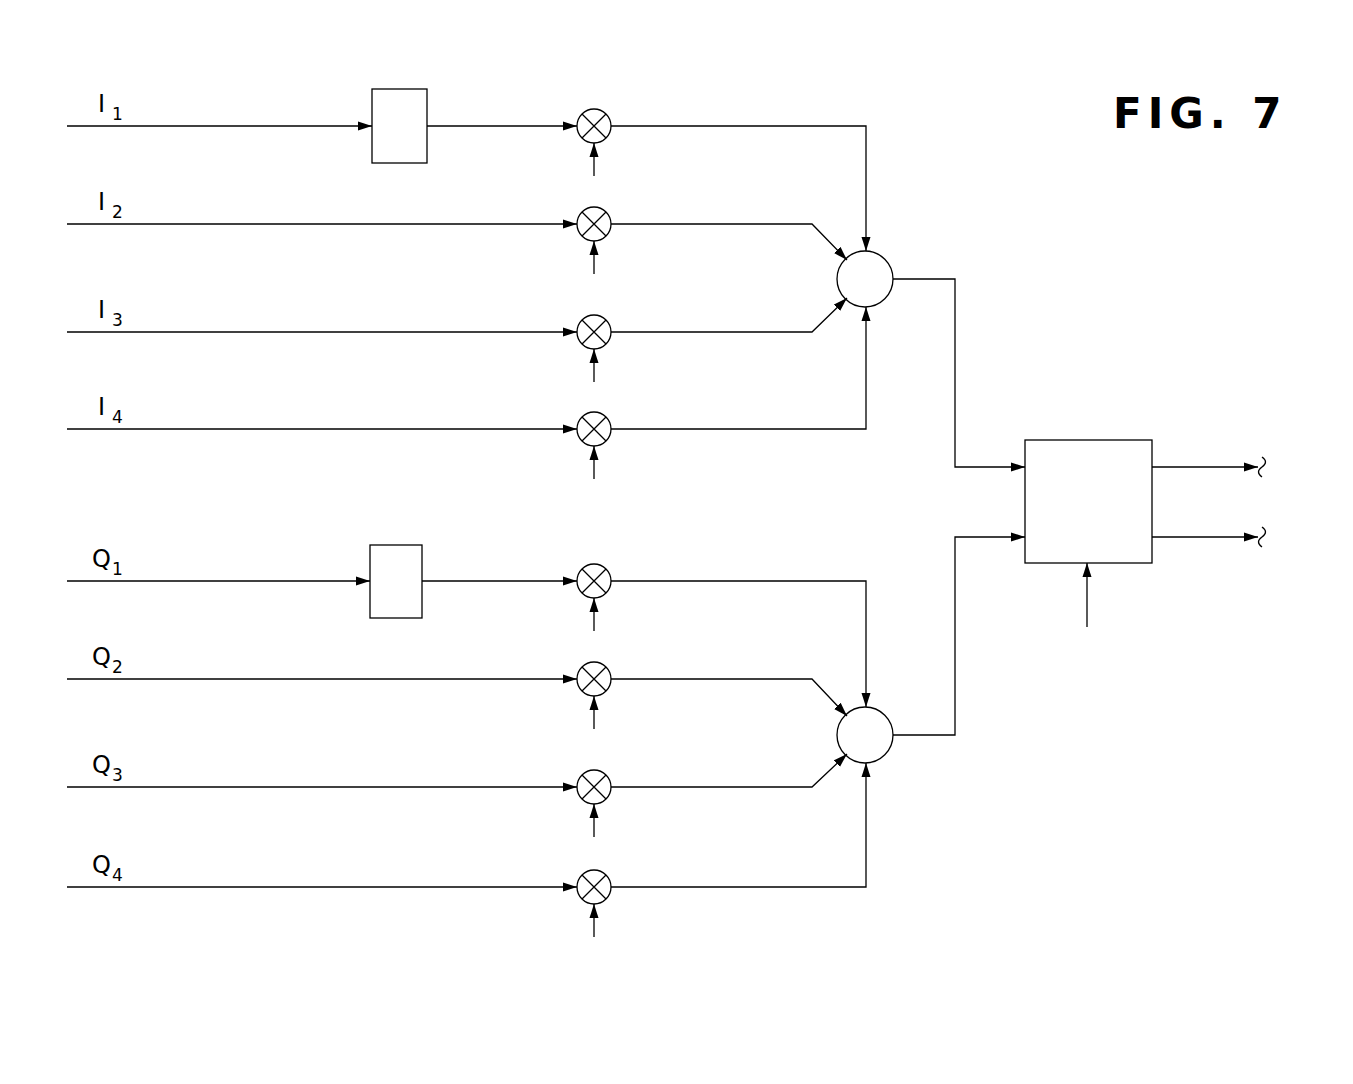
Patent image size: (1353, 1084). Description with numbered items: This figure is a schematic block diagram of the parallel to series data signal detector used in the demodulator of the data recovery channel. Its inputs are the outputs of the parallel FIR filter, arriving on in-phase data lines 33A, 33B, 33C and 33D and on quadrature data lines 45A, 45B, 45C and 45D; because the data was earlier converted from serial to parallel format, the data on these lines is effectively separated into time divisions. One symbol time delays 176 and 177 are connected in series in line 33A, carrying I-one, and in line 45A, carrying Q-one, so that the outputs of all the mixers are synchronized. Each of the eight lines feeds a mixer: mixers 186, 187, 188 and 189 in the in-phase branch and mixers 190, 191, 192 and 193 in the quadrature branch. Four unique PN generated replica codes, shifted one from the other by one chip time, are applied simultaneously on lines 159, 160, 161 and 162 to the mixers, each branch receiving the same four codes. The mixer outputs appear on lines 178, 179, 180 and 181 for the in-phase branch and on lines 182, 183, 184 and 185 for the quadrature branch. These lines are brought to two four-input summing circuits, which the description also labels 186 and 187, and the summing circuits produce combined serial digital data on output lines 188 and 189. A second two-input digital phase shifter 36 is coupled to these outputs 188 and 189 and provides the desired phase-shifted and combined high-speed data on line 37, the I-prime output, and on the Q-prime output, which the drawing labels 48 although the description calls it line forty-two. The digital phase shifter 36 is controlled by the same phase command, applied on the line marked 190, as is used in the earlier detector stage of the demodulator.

The data line 33A is at (250, 126).
The data line 33B is at (250, 224).
The data line 33C is at (250, 332).
The data line 33D is at (250, 429).
The data line 45A is at (250, 581).
The data line 45B is at (250, 679).
The data line 45C is at (250, 787).
The data line 45D is at (250, 887).
The one symbol time delay 176 is at (372, 157).
The one symbol time delay 177 is at (370, 599).
The mixer 186 is at (606, 112).
The mixer 187 is at (608, 214).
The mixer 188 is at (608, 321).
The mixer 189 is at (608, 419).
The mixer 190 is at (606, 567).
The mixer 191 is at (608, 671).
The mixer 192 is at (608, 779).
The mixer 193 is at (608, 879).
The PN replica code line 159 is at (590, 170).
The PN replica code line 160 is at (590, 262).
The PN replica code line 161 is at (590, 373).
The PN replica code line 162 is at (590, 470).
The mixer output line 178 is at (733, 126).
The mixer output line 179 is at (735, 224).
The mixer output line 180 is at (735, 332).
The mixer output line 181 is at (735, 429).
The mixer output line 182 is at (735, 581).
The mixer output line 183 is at (735, 679).
The mixer output line 184 is at (735, 787).
The mixer output line 185 is at (735, 887).
The second digital phase shifter 36 is at (1085, 440).
The output line 37 is at (1222, 467).
The Q' output 48 is at (1210, 540).